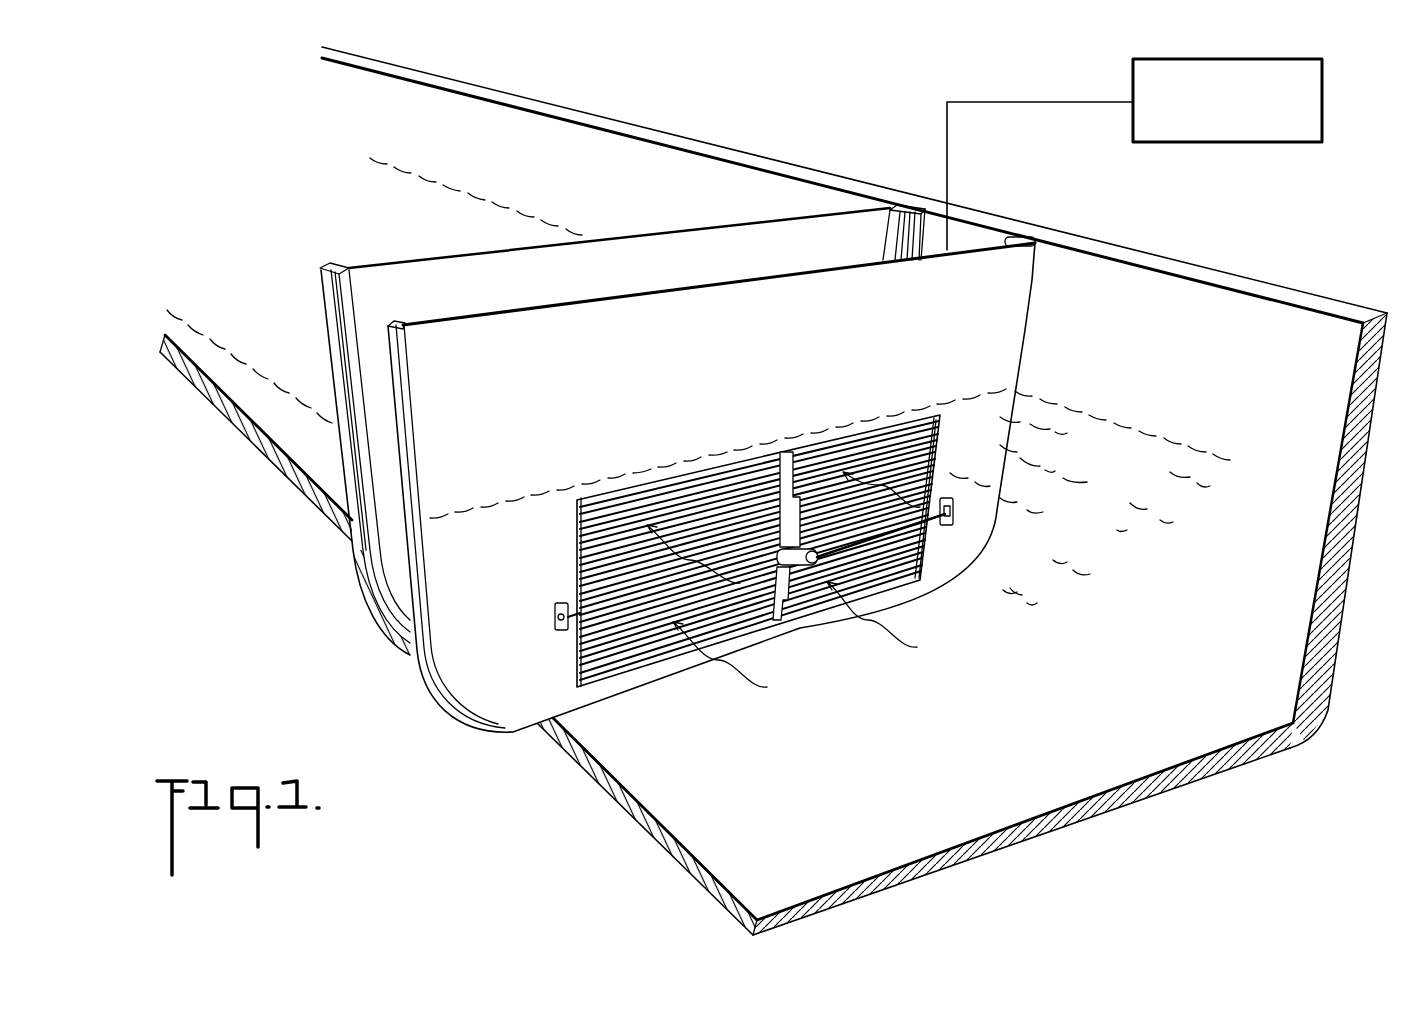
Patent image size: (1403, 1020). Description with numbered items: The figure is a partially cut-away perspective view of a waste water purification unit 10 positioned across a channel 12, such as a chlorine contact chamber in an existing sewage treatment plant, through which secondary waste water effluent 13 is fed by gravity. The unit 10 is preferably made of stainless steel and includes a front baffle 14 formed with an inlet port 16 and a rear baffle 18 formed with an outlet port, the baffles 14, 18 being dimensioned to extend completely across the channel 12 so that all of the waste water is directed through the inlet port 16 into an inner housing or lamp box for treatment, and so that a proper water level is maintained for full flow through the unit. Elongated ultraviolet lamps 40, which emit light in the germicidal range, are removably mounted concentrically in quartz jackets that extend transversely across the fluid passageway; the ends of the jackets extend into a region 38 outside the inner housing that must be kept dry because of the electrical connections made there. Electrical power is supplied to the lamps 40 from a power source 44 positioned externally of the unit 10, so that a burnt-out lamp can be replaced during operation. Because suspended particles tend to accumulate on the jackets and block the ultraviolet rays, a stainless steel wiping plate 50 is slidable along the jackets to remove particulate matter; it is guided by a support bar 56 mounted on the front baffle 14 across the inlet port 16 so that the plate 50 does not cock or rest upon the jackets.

The waste water purification unit 10 is at (1036, 349).
The channel 12 is at (1222, 278).
The secondary waste water effluent 13 is at (1200, 453).
The front baffle 14 is at (453, 692).
The inlet port 16 is at (577, 517).
The rear baffle 18 is at (435, 254).
The region outside the inner housing 38 is at (388, 553).
The ultraviolet lamps 40 is at (632, 491).
The power source 44 is at (1322, 135).
The wiping plate 50 is at (792, 455).
The support bar 56 is at (580, 617).